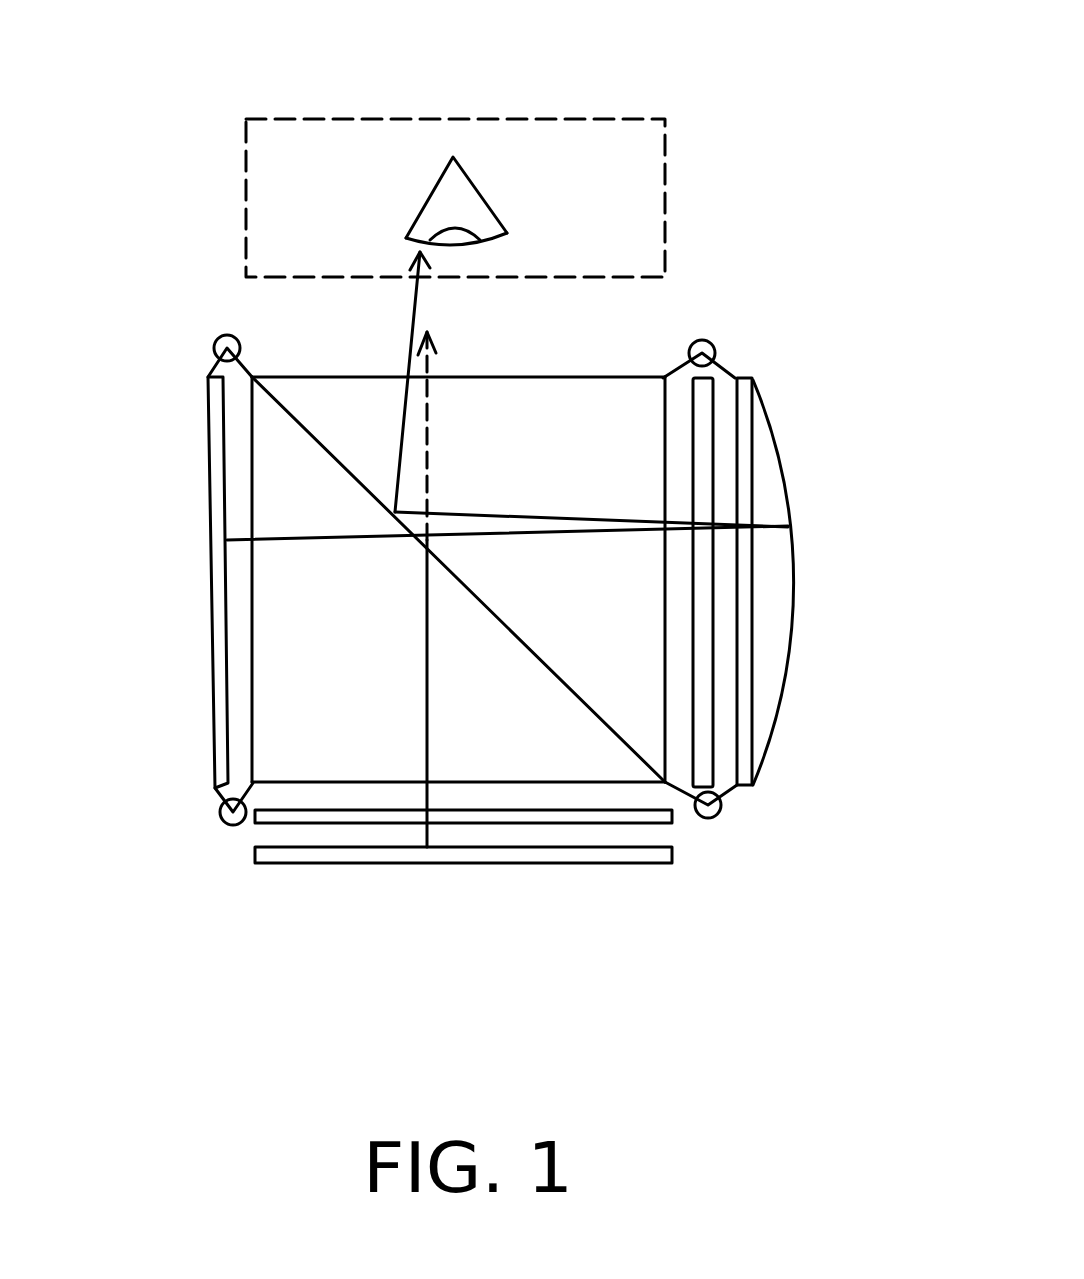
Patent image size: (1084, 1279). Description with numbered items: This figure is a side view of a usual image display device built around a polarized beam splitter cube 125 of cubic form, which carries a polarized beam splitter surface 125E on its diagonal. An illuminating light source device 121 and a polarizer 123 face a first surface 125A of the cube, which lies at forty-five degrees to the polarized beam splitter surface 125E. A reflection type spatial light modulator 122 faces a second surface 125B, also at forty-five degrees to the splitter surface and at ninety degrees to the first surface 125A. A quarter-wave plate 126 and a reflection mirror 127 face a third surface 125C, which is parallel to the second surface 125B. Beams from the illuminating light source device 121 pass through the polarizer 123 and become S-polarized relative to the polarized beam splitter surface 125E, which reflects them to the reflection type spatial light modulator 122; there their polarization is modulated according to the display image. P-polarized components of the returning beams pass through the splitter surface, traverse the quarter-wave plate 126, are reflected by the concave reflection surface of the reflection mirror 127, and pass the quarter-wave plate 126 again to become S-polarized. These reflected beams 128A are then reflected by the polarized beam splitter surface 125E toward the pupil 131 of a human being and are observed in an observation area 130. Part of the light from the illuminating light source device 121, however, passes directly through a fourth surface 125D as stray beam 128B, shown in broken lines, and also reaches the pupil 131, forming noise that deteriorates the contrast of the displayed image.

The illuminating light source device 121 is at (327, 857).
The reflection type spatial light modulator 122 is at (212, 580).
The polarizer 123 is at (527, 822).
The polarized beam splitter cube 125 is at (481, 574).
The first surface 125A is at (615, 785).
The second surface 125B is at (253, 708).
The third surface 125C is at (665, 453).
The fourth surface 125D is at (563, 377).
The polarized beam splitter surface 125E is at (308, 410).
The quarter-wave plate 126 is at (707, 650).
The reflection mirror 127 is at (770, 565).
The reflected beams 128A is at (412, 307).
The stray beam 128B is at (430, 413).
The observation area 130 is at (485, 118).
The pupil 131 is at (477, 192).